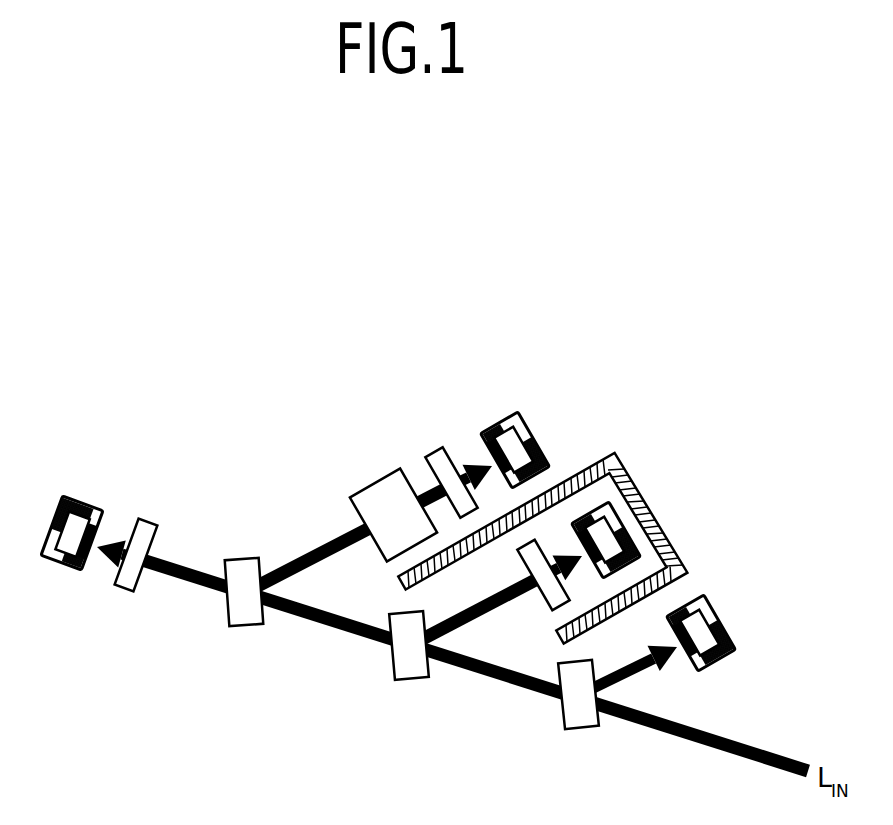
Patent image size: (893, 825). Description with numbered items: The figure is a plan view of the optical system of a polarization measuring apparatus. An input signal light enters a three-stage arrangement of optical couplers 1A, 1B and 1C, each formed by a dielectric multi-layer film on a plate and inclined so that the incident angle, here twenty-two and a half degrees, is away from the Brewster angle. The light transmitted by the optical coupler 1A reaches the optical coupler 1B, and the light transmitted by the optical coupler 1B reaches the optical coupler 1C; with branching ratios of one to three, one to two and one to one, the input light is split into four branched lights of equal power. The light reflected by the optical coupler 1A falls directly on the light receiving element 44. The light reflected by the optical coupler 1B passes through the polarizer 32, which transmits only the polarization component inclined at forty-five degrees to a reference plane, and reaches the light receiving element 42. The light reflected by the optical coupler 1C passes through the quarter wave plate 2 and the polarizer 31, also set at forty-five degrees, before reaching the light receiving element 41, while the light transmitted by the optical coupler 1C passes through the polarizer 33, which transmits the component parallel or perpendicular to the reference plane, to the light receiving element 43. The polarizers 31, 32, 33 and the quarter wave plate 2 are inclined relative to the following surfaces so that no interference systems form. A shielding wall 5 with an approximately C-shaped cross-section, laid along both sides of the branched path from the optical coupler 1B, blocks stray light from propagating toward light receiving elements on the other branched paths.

The optical coupler 1A is at (580, 730).
The optical coupler 1B is at (413, 680).
The optical coupler 1C is at (247, 628).
The quarter wave plate 2 is at (373, 485).
The polarizer 31 is at (433, 445).
The polarizer 32 is at (543, 602).
The polarizer 33 is at (145, 513).
The light receiving element 41 is at (502, 417).
The light receiving element 42 is at (627, 525).
The light receiving element 43 is at (72, 488).
The light receiving element 44 is at (722, 615).
The shielding wall 5 is at (598, 433).